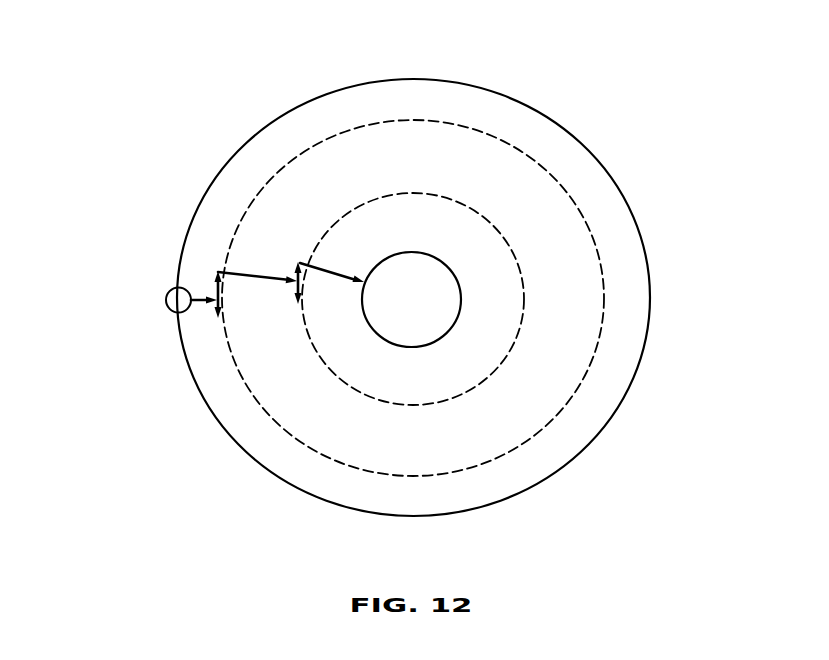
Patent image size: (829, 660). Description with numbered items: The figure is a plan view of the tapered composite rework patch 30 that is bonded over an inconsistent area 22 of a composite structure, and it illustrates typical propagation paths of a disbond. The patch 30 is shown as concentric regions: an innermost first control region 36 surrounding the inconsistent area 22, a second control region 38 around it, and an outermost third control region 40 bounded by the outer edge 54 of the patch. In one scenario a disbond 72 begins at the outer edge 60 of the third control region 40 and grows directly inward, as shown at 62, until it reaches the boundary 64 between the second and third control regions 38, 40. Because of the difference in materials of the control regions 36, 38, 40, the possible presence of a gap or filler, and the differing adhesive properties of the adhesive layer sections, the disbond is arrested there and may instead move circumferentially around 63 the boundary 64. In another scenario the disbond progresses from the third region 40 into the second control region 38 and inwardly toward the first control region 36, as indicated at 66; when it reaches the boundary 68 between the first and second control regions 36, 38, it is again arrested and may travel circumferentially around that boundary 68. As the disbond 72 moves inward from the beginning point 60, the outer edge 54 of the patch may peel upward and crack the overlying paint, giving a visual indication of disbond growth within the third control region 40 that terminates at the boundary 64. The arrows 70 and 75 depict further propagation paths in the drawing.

The inconsistent area 22 is at (430, 293).
The composite rework patch 30 is at (620, 150).
The first control region 36 is at (392, 213).
The second control region 38 is at (267, 383).
The third control region 40 is at (593, 397).
The outer edge of the rework patch 54 is at (158, 320).
The outer edge of the third control region 60 is at (180, 300).
The inward disbond growth 62 is at (158, 284).
The circumferential movement around the boundary 63 is at (215, 307).
The boundary between control regions 38 and 40 64 is at (558, 423).
The disbond progression 66 is at (240, 272).
The boundary between control regions 36 and 38 68 is at (297, 293).
The light path 70 is at (332, 272).
The disbond 72 is at (192, 295).
The light path 75 is at (358, 331).